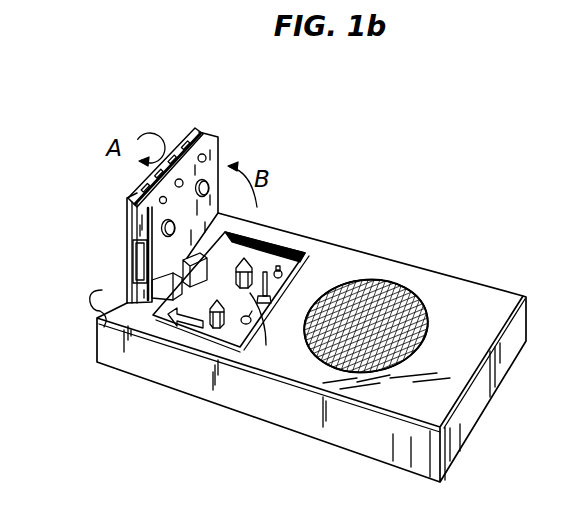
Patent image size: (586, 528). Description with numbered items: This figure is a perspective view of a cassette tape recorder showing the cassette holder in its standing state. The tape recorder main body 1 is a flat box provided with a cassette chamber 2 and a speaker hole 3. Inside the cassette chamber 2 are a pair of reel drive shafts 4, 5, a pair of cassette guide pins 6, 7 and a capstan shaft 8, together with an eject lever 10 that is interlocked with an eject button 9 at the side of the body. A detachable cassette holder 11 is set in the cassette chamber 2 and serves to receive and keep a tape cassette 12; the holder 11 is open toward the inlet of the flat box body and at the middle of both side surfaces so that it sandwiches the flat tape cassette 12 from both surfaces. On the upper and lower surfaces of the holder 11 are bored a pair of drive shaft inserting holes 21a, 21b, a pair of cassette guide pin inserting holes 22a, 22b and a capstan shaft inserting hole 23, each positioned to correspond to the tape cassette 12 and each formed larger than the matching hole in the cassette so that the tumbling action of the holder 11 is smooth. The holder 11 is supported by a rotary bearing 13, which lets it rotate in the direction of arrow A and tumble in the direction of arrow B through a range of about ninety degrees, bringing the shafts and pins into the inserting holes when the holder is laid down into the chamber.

The tape recorder main body 1 is at (478, 304).
The cassette chamber 2 is at (250, 262).
The speaker hole 3 is at (416, 293).
The reel drive shaft 4 is at (266, 345).
The reel drive shaft 5 is at (200, 322).
The cassette guide pin 6 is at (270, 268).
The cassette guide pin 7 is at (238, 320).
The capstan shaft 8 is at (283, 269).
The eject button 9 is at (92, 308).
The eject lever 10 is at (160, 331).
The cassette holder 11 is at (207, 168).
The tape cassette 12 is at (140, 220).
The rotary bearing 13 is at (238, 236).
The drive shaft inserting hole 21a is at (207, 183).
The drive shaft inserting hole 21b is at (156, 246).
The cassette guide pin inserting hole 22a is at (218, 134).
The cassette guide pin inserting hole 22b is at (160, 231).
The capstan shaft inserting hole 23 is at (174, 183).